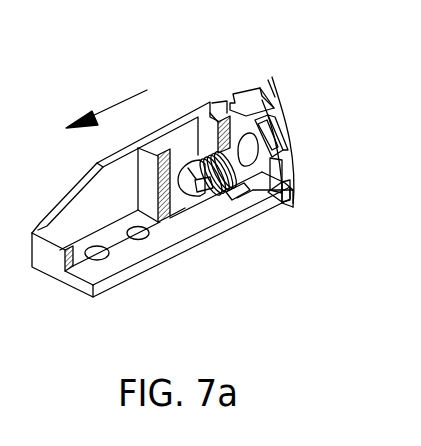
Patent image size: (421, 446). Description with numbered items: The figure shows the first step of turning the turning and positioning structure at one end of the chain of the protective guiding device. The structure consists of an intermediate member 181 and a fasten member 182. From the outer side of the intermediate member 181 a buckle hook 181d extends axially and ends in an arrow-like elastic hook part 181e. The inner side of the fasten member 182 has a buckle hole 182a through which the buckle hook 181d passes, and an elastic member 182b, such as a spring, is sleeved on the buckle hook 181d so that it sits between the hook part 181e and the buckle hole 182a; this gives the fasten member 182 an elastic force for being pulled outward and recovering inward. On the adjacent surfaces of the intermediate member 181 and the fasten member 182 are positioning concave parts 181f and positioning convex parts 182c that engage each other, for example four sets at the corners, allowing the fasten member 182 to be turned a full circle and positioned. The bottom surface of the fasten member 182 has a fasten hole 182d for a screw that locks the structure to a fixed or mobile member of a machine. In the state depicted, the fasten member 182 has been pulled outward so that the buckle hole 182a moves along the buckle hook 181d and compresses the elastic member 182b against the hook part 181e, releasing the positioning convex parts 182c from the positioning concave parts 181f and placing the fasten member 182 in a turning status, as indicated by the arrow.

The intermediate member 181 is at (256, 88).
The buckle hook 181d is at (236, 178).
The hook part 181e is at (195, 187).
The positioning concave parts 181f is at (284, 188).
The fasten member 182 is at (183, 113).
The buckle hole 182a is at (216, 120).
The elastic member 182b is at (234, 187).
The positioning convex parts 182c is at (272, 202).
The fasten hole 182d is at (103, 265).